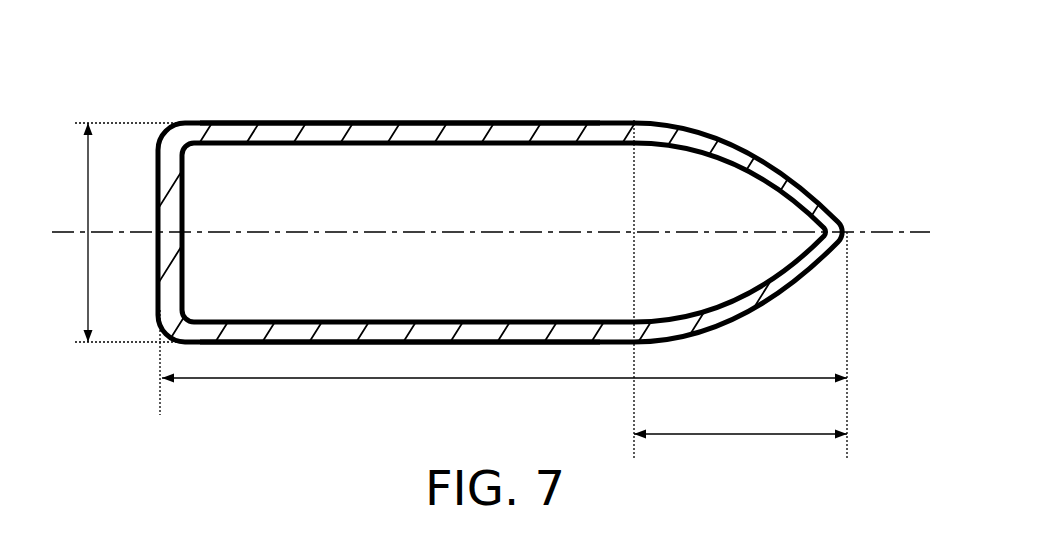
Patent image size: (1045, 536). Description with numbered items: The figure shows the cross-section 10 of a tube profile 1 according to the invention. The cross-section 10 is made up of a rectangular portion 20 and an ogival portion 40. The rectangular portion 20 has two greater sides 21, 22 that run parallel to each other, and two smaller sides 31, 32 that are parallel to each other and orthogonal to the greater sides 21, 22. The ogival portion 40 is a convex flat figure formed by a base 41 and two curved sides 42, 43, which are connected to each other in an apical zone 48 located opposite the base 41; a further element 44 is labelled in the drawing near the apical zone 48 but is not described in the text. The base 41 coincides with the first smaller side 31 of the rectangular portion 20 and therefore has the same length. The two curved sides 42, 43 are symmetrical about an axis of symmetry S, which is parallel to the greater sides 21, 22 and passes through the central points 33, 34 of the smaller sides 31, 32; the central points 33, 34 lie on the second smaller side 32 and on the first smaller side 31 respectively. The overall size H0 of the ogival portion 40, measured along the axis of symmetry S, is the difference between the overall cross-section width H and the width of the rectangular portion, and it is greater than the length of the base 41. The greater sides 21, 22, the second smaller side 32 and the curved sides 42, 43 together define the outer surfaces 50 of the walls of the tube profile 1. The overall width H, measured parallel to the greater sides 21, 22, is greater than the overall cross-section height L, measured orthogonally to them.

The tube profile 1 is at (674, 103).
The cross-section 10 is at (476, 118).
The rectangular portion 20 is at (520, 148).
The greater side 21 is at (248, 123).
The greater side 22 is at (325, 343).
The first smaller side 31 is at (637, 278).
The second smaller side 32 is at (137, 232).
The central point 33 is at (158, 248).
The central point 34 is at (634, 232).
The ogival portion 40 is at (706, 204).
The base 41 is at (633, 185).
The curved side 42 is at (792, 150).
The curved side 43 is at (781, 320).
The nose inner tip 44 is at (837, 202).
The apical zone 48 is at (848, 230).
The outer surfaces 50 is at (603, 122).
The overall cross-section height L is at (85, 175).
The axis of symmetry S is at (70, 235).
The overall cross-section width H is at (700, 378).
The overall size of the ogival portion H0 is at (688, 437).